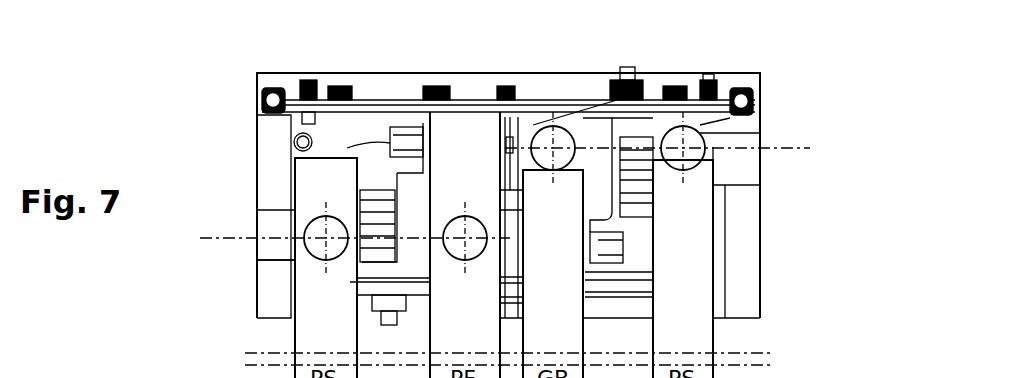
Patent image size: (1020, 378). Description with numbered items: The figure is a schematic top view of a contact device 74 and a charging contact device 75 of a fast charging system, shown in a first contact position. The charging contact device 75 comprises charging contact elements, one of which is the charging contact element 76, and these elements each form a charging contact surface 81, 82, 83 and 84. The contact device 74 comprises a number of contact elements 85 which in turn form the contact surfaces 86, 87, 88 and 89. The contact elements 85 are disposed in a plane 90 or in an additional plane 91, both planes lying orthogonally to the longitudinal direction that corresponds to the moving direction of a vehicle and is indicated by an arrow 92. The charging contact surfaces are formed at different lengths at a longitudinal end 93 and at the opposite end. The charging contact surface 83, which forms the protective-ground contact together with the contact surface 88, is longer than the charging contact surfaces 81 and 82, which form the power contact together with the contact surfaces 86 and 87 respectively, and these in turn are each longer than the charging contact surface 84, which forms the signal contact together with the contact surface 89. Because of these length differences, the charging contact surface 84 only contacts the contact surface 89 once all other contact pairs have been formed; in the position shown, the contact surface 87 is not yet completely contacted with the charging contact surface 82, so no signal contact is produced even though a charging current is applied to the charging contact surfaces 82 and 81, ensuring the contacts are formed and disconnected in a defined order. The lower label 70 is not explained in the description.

The contact device 74 is at (298, 64).
The charging contact surface 81 is at (313, 187).
The longitudinal end 93 is at (276, 153).
The contact surface 86 is at (317, 231).
The additional plane 91 is at (213, 238).
The contact element 85 is at (308, 252).
The charging contact element 76 is at (290, 336).
The second plate lower portion 70 is at (417, 341).
The charging contact surface 83 is at (447, 170).
The contact surface 88 is at (475, 185).
The contact surface 89 is at (558, 190).
The charging contact surface 84 is at (572, 187).
The contact surface 87 is at (760, 95).
The plane 90 is at (803, 147).
The charging contact surface 82 is at (690, 226).
The charging contact device 75 is at (732, 336).
The arrow 92 is at (813, 332).